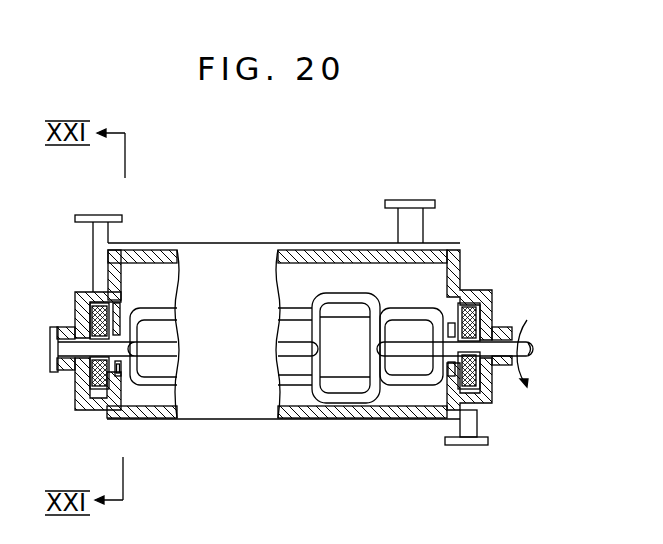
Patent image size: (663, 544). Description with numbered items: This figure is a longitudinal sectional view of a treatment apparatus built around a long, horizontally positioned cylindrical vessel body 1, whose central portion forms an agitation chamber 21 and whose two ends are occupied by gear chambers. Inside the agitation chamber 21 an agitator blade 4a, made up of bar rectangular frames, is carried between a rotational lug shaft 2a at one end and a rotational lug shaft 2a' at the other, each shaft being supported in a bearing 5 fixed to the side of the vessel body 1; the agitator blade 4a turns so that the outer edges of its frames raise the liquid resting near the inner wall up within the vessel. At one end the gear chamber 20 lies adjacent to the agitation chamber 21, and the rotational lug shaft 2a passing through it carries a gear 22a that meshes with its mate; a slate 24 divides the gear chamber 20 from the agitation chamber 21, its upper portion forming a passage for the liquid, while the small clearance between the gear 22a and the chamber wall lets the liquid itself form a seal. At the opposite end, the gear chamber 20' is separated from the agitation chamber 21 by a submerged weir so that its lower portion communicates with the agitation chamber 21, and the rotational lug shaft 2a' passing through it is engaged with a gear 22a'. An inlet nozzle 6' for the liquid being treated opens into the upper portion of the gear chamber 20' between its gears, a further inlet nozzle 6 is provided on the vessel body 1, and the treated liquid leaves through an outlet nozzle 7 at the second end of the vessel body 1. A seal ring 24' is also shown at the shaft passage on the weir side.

The vessel body 1 is at (247, 243).
The agitation chamber 21 is at (358, 280).
The agitator blade 4a is at (318, 293).
The rotational lug shaft 2a is at (483, 353).
The rotational lug shaft 2a' is at (96, 331).
The gear chamber 20 is at (476, 325).
The gear chamber 20' is at (84, 327).
The gear 22a is at (509, 323).
The gear 22a' is at (136, 382).
The slate 24 is at (429, 389).
The seal ring 24' is at (145, 324).
The bearing 5 is at (70, 368).
The inlet nozzle 6 is at (410, 193).
The inlet nozzle 6' is at (98, 230).
The outlet nozzle 7 is at (467, 448).